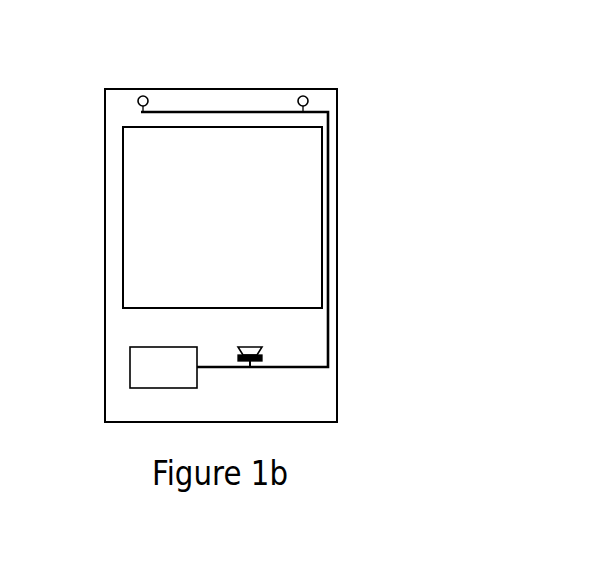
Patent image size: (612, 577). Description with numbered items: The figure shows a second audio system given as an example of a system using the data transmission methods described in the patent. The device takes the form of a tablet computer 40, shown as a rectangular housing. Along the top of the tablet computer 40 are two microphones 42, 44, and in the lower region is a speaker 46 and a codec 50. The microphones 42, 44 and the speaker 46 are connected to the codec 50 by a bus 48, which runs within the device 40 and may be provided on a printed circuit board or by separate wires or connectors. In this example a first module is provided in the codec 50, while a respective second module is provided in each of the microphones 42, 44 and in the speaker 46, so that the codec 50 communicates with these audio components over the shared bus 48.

The tablet computer 40 is at (103, 157).
The microphone 42 is at (142, 96).
The microphone 44 is at (303, 96).
The speaker 46 is at (262, 345).
The bus 48 is at (281, 368).
The codec 50 is at (197, 388).